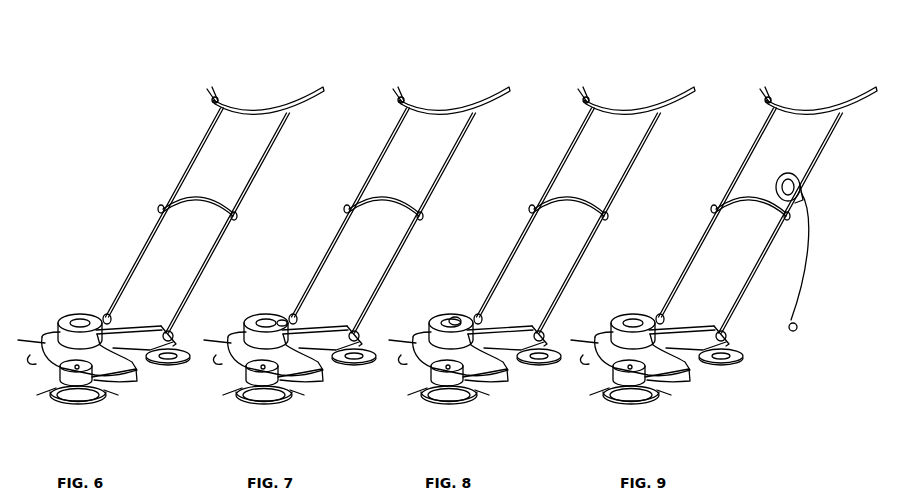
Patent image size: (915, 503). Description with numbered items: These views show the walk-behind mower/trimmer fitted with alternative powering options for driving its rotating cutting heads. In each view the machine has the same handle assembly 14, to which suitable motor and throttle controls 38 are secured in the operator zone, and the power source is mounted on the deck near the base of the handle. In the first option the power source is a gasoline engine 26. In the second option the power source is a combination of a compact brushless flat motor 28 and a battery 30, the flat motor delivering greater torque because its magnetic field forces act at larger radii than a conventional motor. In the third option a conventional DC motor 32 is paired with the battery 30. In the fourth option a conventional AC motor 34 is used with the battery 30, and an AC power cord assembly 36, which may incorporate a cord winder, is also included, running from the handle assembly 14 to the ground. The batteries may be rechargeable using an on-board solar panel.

In FIG. 6, the handle assembly 14 is at (168, 162).
In FIG. 6, the gasoline engine 26 is at (83, 310).
In FIG. 7, the flat motor 28 is at (272, 298).
In FIG. 7, the battery 30 is at (262, 317).
In FIG. 8, the battery 30 is at (440, 322).
In FIG. 8, the DC motor 32 is at (440, 297).
In FIG. 9, the AC motor 34 is at (629, 316).
In FIG. 9, the AC power cord assembly 36 is at (830, 241).
In FIG. 6, the motor and throttle controls 38 is at (222, 97).
In FIG. 7, the motor and throttle controls 38 is at (439, 69).
In FIG. 8, the motor and throttle controls 38 is at (624, 69).